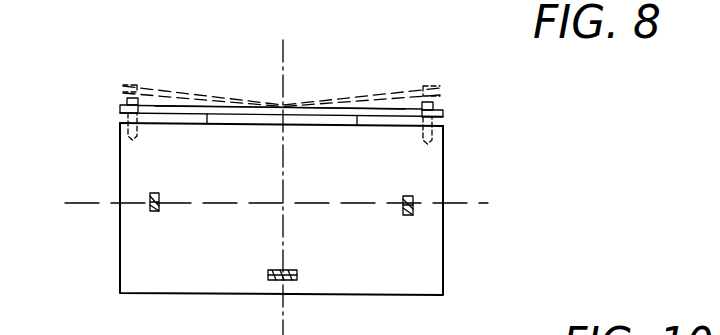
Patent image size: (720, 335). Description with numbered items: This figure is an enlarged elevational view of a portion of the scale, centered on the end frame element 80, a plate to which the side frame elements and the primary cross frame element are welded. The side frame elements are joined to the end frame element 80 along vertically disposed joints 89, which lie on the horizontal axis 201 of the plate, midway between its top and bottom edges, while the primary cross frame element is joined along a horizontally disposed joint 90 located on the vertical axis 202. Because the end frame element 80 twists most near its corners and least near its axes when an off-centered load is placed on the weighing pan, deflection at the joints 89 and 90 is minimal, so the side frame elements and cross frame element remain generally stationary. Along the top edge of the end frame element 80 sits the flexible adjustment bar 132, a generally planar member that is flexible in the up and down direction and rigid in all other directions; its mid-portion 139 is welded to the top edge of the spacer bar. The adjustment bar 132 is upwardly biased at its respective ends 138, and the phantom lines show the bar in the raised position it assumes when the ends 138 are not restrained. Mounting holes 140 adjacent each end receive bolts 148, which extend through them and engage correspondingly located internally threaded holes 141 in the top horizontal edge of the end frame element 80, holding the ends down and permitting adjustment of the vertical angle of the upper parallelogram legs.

The end frame element 80 is at (220, 264).
The vertically disposed joints 89 is at (159, 207).
The horizontally disposed joint 90 is at (297, 272).
The flexible adjustment bar 132 is at (252, 107).
The ends of the adjustment bar 138 is at (155, 108).
The mid-portion of the adjustment bar 139 is at (224, 112).
The mounting holes 140 is at (120, 108).
The internally threaded holes 141 is at (134, 138).
The bolts 148 is at (125, 99).
The horizontal axis of the end frame element 201 is at (461, 204).
The vertical axis of the end frame element 202 is at (286, 65).